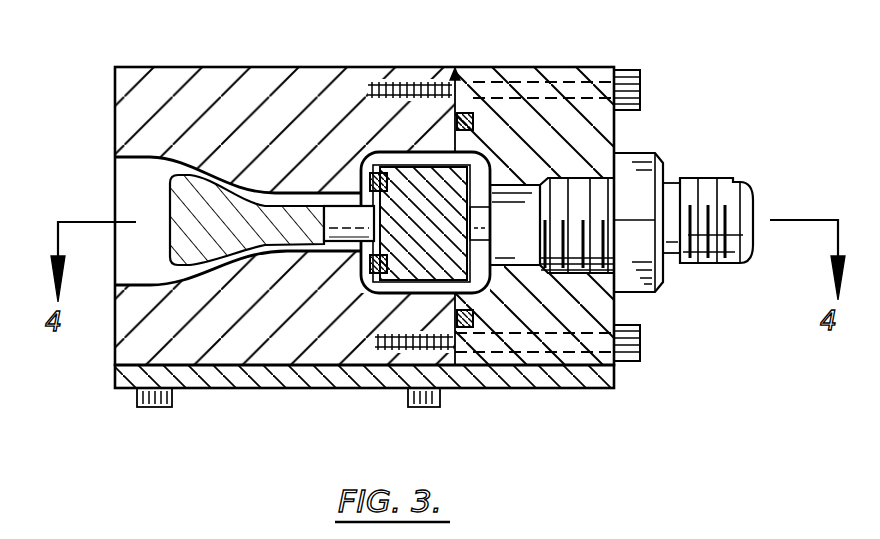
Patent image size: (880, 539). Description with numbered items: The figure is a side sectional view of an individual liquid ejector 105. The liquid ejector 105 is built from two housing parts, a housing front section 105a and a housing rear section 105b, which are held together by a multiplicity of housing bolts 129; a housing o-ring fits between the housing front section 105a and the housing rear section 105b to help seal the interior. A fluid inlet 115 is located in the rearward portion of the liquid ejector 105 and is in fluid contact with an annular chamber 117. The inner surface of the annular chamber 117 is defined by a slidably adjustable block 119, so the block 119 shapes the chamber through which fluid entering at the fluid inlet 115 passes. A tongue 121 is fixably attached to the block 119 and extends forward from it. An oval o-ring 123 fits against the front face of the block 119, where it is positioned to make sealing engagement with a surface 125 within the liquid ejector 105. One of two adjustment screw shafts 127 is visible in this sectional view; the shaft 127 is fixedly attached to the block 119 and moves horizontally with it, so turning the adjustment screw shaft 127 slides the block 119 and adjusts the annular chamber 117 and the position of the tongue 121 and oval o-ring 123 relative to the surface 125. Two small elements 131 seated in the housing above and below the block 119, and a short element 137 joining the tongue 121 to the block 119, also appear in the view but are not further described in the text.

The liquid ejector 105 is at (94, 392).
The housing front section 105a is at (252, 67).
The housing rear section 105b is at (563, 67).
The fluid inlet 115 is at (742, 187).
The annular chamber 117 is at (407, 157).
The slidably adjustable block 119 is at (402, 272).
The tongue 121 is at (176, 195).
The oval o ring 123 is at (369, 182).
The surface 125 is at (366, 288).
The adjustment screw shaft 127 is at (483, 208).
The housing bolts 129 is at (641, 84).
The set screws 131 is at (466, 112).
The shaft 137 is at (337, 213).